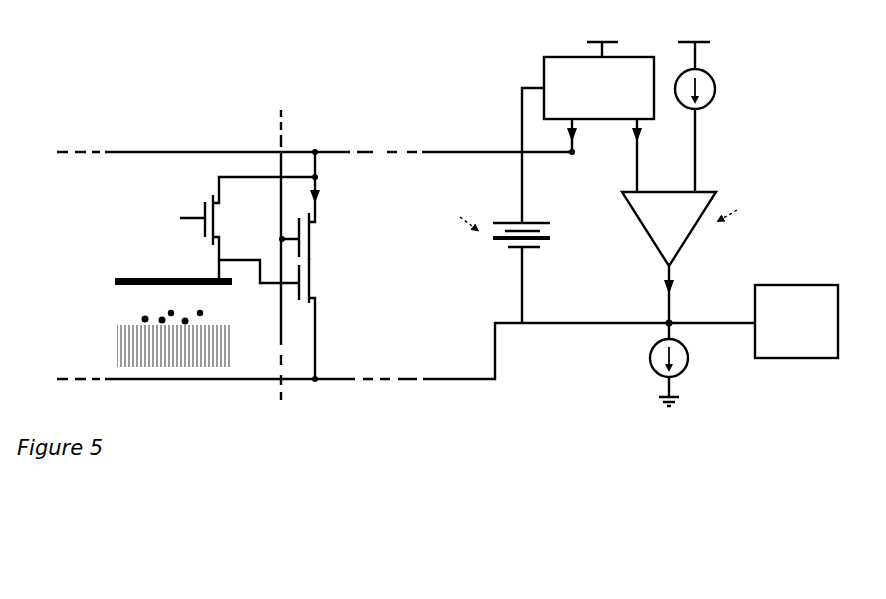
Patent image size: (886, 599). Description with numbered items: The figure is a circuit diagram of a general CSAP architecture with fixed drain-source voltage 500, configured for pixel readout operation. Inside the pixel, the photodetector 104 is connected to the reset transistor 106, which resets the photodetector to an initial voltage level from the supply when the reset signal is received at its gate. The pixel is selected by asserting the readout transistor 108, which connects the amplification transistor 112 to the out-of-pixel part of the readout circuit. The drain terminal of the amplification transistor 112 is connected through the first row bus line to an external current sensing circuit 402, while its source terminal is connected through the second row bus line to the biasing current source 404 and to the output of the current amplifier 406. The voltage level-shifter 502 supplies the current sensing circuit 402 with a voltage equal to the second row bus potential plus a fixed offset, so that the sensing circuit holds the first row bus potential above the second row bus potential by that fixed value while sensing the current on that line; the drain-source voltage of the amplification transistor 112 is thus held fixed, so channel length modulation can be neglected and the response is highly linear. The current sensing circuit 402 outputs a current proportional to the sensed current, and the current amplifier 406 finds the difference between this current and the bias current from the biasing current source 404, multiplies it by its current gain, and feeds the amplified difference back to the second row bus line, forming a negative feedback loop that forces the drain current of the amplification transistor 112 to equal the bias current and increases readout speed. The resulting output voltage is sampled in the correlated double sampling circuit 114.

The general CSAP architecture with fixed Vds3 500 is at (411, 524).
The photodetector 104 is at (110, 320).
The reset transistor Q1 106 is at (230, 227).
The transistor Q2 108 is at (334, 204).
The amplification transistor Q3 112 is at (339, 320).
The current sensing circuit 402 is at (562, 60).
The voltage level-shifter 502 is at (512, 252).
The current amplifier 406 is at (715, 170).
The biasing current source Ibias 404 is at (648, 372).
The correlated double sampling (CDS) circuit 114 is at (785, 350).